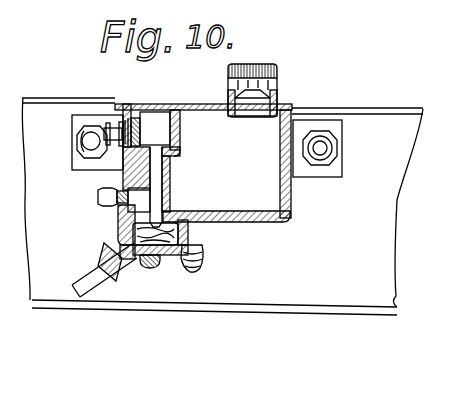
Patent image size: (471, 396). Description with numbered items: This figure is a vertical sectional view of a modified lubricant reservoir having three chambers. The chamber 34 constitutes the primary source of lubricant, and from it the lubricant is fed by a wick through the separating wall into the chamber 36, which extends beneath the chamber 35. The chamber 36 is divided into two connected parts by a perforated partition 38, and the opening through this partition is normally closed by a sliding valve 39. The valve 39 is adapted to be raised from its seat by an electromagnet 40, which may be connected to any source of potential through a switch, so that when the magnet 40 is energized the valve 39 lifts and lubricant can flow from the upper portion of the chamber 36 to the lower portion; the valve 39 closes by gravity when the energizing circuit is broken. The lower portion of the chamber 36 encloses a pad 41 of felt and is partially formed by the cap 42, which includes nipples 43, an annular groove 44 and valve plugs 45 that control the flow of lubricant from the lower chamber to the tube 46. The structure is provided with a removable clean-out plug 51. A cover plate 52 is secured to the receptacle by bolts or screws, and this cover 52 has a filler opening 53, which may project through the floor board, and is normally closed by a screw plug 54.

The chamber 34 is at (263, 135).
The chamber 35 is at (135, 117).
The chamber 36 is at (127, 220).
The perforated partition 38 is at (137, 203).
The sliding valve 39 is at (157, 197).
The electromagnet 40 is at (157, 126).
The pad 41 is at (160, 233).
The cap 42 is at (147, 258).
The nipples 43 is at (203, 250).
The annular groove 44 is at (170, 250).
The valve plugs 45 is at (120, 275).
The tube 46 is at (80, 290).
The clean-out plug 51 is at (103, 197).
The cover plate 52 is at (190, 104).
The filler opening 53 is at (245, 100).
The screw plug 54 is at (277, 67).